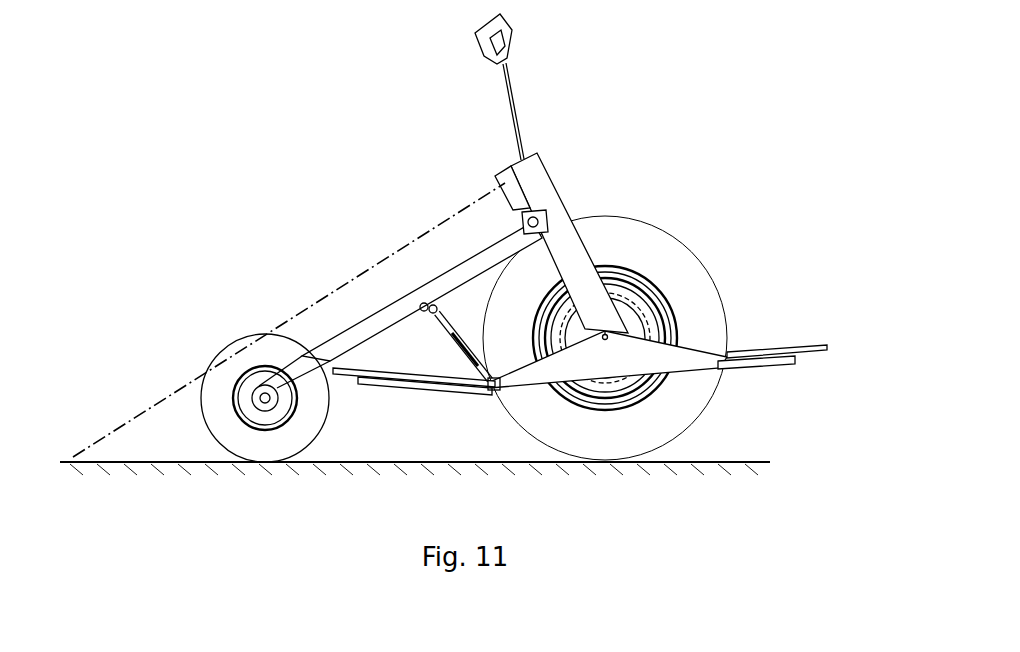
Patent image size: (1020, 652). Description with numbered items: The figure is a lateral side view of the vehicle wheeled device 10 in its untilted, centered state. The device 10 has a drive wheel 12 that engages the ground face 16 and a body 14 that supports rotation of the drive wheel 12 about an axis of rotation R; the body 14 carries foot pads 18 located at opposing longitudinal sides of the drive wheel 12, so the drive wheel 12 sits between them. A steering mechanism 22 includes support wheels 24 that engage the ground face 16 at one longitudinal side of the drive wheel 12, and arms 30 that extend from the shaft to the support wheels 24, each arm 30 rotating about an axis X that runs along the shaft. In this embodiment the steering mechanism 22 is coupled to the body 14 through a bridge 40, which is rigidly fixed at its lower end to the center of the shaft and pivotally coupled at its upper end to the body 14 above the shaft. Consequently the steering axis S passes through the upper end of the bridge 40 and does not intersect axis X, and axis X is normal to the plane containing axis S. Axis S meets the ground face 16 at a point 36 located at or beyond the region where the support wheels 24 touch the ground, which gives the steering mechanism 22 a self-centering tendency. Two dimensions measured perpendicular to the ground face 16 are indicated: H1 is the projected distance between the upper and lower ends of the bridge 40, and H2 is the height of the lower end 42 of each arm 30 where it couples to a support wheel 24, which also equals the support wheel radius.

The vehicle wheeled device 10 is at (368, 112).
The drive wheel 12 is at (711, 292).
The body 14 is at (612, 247).
The ground face 16 is at (752, 455).
The foot pads 18 is at (371, 371).
The steering mechanism 22 is at (343, 240).
The support wheels 24 is at (242, 358).
The arms 30 is at (427, 288).
The point 36 is at (72, 458).
The bridge 40 is at (508, 203).
The lower end of arm 42 is at (262, 393).
The steering axis S is at (297, 312).
The axis X is at (528, 222).
The axis of rotation R is at (605, 341).
The projected distance between upper and lower ends of bridge H1 is at (500, 182).
The height of lower end of arm H2 is at (265, 398).